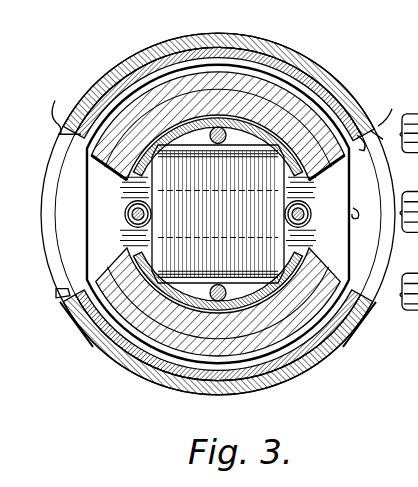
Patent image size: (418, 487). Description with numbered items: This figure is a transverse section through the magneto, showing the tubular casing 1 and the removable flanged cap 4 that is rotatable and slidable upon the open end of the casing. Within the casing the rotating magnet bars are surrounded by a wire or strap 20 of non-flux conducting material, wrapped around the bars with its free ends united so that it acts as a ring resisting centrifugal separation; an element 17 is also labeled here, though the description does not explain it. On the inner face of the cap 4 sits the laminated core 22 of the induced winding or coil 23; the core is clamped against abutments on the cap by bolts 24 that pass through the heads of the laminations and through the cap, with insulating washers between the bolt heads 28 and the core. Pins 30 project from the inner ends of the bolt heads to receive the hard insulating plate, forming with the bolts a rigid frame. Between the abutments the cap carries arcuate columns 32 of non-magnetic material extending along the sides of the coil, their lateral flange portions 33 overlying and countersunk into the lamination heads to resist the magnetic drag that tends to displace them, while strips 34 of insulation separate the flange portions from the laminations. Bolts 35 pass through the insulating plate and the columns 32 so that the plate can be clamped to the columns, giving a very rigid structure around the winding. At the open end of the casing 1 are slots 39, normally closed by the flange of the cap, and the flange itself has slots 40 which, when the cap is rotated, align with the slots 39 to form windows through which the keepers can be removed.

The tubular casing 1 is at (218, 213).
The flanged cap 4 is at (218, 84).
The lower clamp band 17 is at (225, 202).
The wire or strap 20 is at (204, 214).
The laminated core 22 is at (202, 214).
The induced winding or coil 23 is at (208, 188).
The bolts 24 is at (406, 212).
The heads of the bolts 28 is at (217, 201).
The pins 30 is at (317, 217).
The arcuate columns 32 is at (341, 348).
The lateral flange portions 33 is at (69, 332).
The strips of insulation 34 is at (238, 274).
The bolts 35 is at (254, 203).
The slots 39 is at (205, 233).
The slots 40 is at (222, 112).